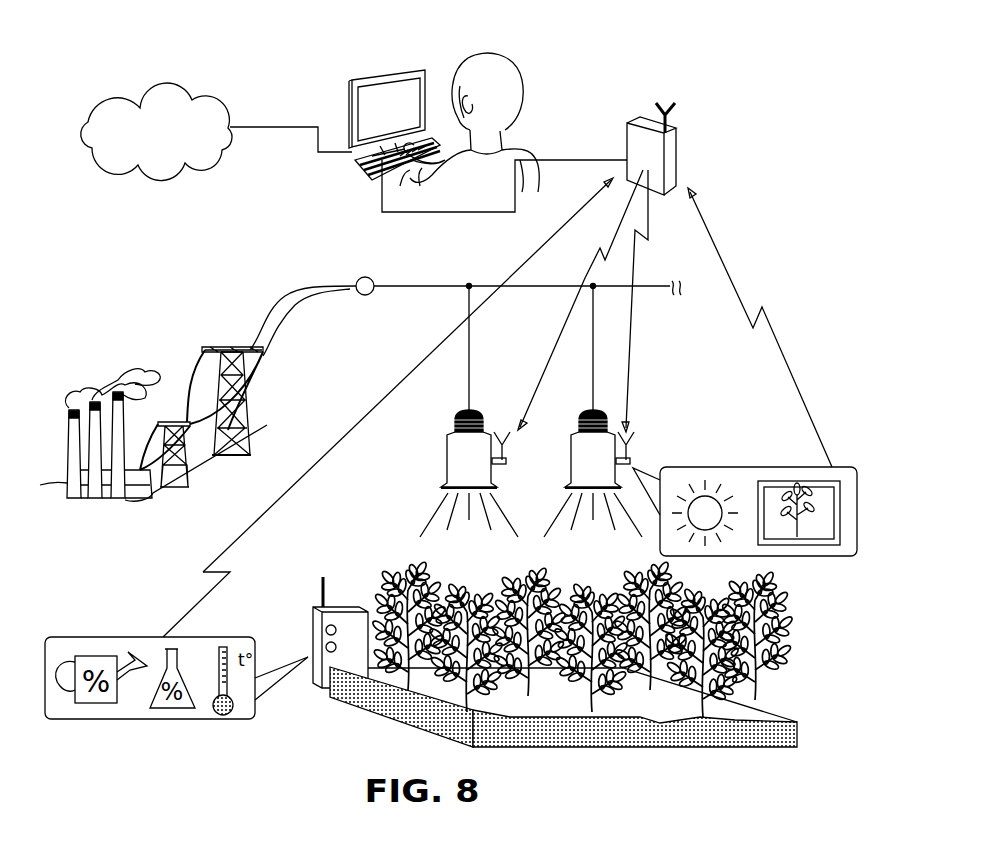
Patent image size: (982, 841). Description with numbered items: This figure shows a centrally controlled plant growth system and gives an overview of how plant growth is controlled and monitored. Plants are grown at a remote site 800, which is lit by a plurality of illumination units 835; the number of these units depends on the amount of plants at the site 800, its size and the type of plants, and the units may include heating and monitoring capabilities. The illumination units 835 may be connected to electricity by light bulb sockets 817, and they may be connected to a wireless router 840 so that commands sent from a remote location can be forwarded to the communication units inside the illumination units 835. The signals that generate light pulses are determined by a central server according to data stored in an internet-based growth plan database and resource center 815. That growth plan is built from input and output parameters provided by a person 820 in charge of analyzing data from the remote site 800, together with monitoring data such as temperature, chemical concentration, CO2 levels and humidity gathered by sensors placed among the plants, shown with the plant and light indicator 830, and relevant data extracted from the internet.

The site 800 is at (628, 713).
The internet-based growth plan database and resource center 815 is at (148, 98).
The light bulb sockets 817 is at (263, 308).
The person 820 is at (440, 48).
The light and plant sensor display 830 is at (757, 467).
The illumination units 835 is at (413, 492).
The wireless router 840 is at (677, 140).